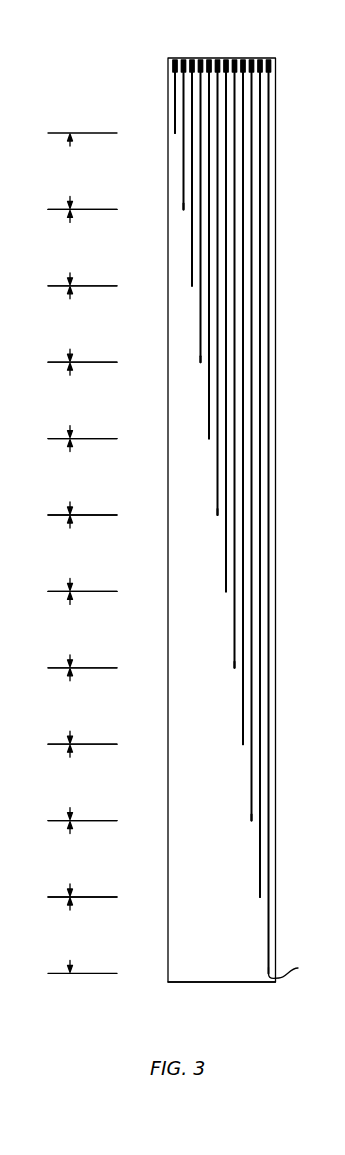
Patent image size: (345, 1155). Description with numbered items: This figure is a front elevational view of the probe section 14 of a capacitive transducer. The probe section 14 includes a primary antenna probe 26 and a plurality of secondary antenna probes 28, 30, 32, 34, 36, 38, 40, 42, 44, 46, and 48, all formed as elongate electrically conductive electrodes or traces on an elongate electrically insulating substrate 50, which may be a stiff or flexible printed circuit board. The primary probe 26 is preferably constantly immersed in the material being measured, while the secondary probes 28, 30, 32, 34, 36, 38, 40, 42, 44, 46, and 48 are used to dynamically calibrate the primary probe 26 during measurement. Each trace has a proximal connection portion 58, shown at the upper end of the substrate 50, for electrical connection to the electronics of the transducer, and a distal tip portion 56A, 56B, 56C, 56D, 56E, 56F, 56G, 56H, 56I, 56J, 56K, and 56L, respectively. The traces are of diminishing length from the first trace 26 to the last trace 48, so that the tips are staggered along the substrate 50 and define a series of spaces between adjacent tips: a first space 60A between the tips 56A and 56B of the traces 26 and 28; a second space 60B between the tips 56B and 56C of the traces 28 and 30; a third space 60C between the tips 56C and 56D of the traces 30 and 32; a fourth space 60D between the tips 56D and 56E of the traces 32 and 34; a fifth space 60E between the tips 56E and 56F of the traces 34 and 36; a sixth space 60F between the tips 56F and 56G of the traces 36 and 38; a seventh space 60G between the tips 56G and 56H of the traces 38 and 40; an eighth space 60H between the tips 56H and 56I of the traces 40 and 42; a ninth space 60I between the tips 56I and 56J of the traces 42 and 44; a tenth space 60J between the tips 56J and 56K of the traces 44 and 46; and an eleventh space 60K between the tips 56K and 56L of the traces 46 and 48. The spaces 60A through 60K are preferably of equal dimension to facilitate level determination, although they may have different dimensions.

The probe section 14 is at (113, 63).
The primary antenna probe 26 is at (267, 941).
The secondary antenna probe 28 is at (258, 861).
The secondary antenna probe 30 is at (250, 791).
The secondary antenna probe 32 is at (242, 715).
The secondary antenna probe 34 is at (233, 638).
The secondary antenna probe 36 is at (225, 561).
The secondary antenna probe 38 is at (216, 481).
The secondary antenna probe 40 is at (208, 412).
The secondary antenna probe 42 is at (199, 331).
The secondary antenna probe 44 is at (190, 254).
The secondary antenna probe 46 is at (181, 175).
The secondary antenna probe 48 is at (173, 99).
The substrate 50 is at (188, 983).
The distal tip portion 56A is at (303, 968).
The distal tip portion 56B is at (260, 897).
The distal tip portion 56C is at (252, 821).
The distal tip portion 56D is at (243, 744).
The distal tip portion 56E is at (234, 668).
The distal tip portion 56F is at (226, 591).
The distal tip portion 56G is at (218, 515).
The distal tip portion 56H is at (209, 439).
The distal tip portion 56I is at (200, 362).
The distal tip portion 56J is at (192, 286).
The distal tip portion 56K is at (184, 209).
The distal tip portion 56L is at (175, 133).
The proximal connection portion 58 is at (268, 58).
The first space 60A is at (82, 935).
The second space 60B is at (82, 859).
The third space 60C is at (82, 782).
The fourth space 60D is at (82, 706).
The fifth space 60E is at (82, 629).
The sixth space 60F is at (82, 553).
The seventh space 60G is at (82, 477).
The eighth space 60H is at (82, 400).
The ninth space 60I is at (82, 324).
The tenth space 60J is at (82, 247).
The eleventh space 60K is at (82, 171).